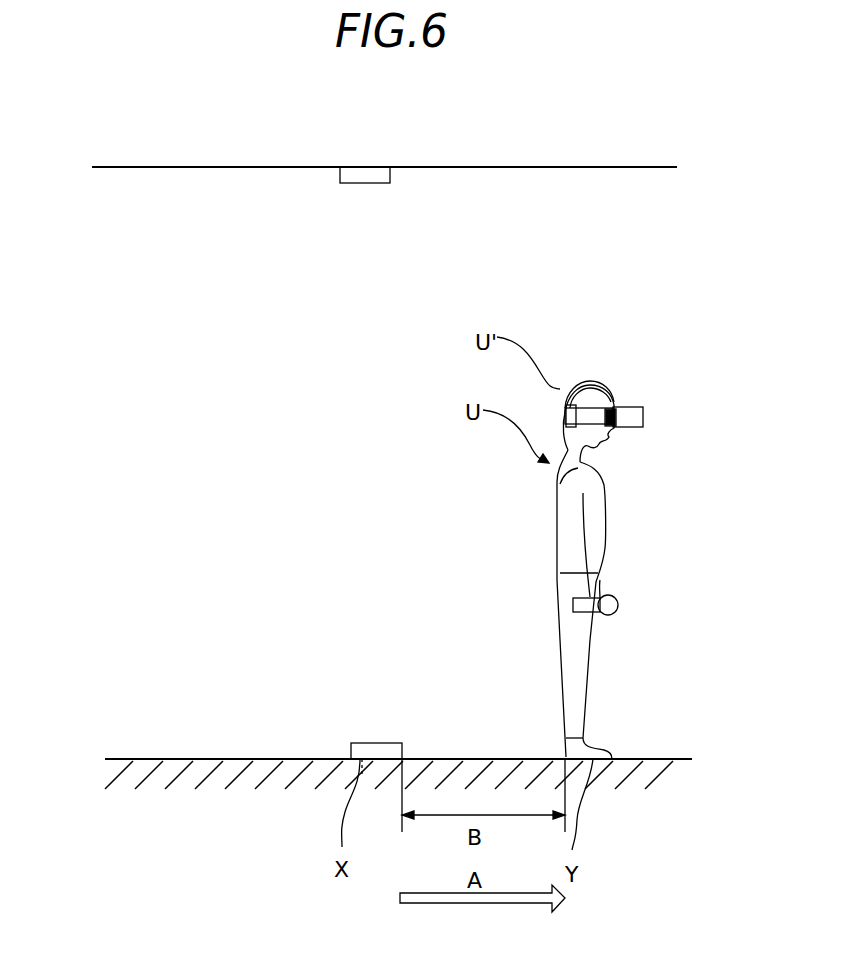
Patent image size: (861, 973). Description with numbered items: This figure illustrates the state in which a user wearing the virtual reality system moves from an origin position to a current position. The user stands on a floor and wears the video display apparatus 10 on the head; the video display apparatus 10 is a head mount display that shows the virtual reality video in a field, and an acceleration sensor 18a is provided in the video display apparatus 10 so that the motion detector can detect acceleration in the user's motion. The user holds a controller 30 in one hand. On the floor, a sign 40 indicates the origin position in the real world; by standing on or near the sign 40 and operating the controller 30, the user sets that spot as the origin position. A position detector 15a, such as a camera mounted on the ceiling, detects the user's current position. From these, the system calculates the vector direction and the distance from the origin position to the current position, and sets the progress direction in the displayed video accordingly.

The position detector 15a is at (358, 184).
The video display apparatus 10 is at (630, 401).
The acceleration sensor 18a is at (618, 432).
The controller 30 is at (610, 595).
The sign 40 is at (403, 752).